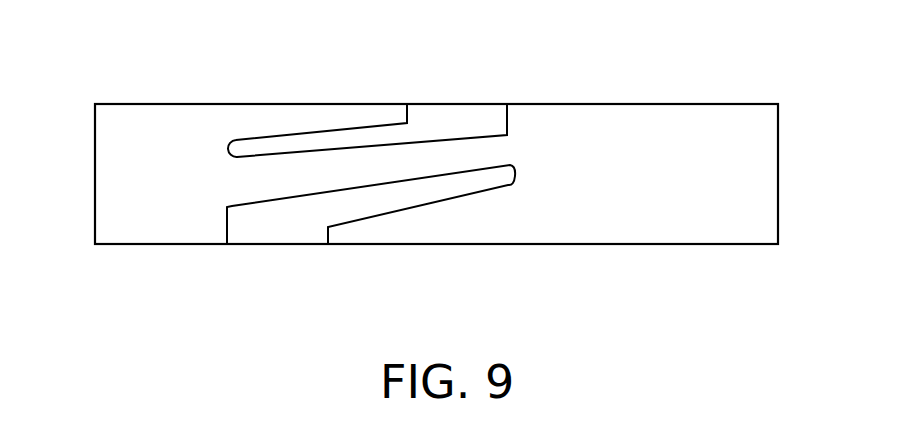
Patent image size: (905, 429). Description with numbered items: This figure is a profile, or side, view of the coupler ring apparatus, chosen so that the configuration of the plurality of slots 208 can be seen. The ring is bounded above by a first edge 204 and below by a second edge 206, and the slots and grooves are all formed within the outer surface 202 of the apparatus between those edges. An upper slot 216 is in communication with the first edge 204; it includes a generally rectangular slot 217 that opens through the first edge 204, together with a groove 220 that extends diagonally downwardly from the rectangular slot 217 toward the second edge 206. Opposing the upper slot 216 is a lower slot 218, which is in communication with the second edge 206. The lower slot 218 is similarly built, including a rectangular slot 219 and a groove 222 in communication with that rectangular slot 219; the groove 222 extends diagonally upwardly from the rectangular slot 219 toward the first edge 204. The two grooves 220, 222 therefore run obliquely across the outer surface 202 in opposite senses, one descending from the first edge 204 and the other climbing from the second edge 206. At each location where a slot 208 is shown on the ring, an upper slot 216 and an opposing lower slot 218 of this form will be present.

The outer surface 202 is at (660, 182).
The first edge 204 is at (583, 104).
The second edge 206 is at (568, 244).
The slot 208 is at (508, 122).
The upper slot 216 is at (425, 110).
The rectangular slot 217 is at (462, 110).
The lower slot 218 is at (270, 235).
The rectangular slot 219 is at (243, 244).
The groove 220 is at (247, 147).
The groove 222 is at (247, 215).